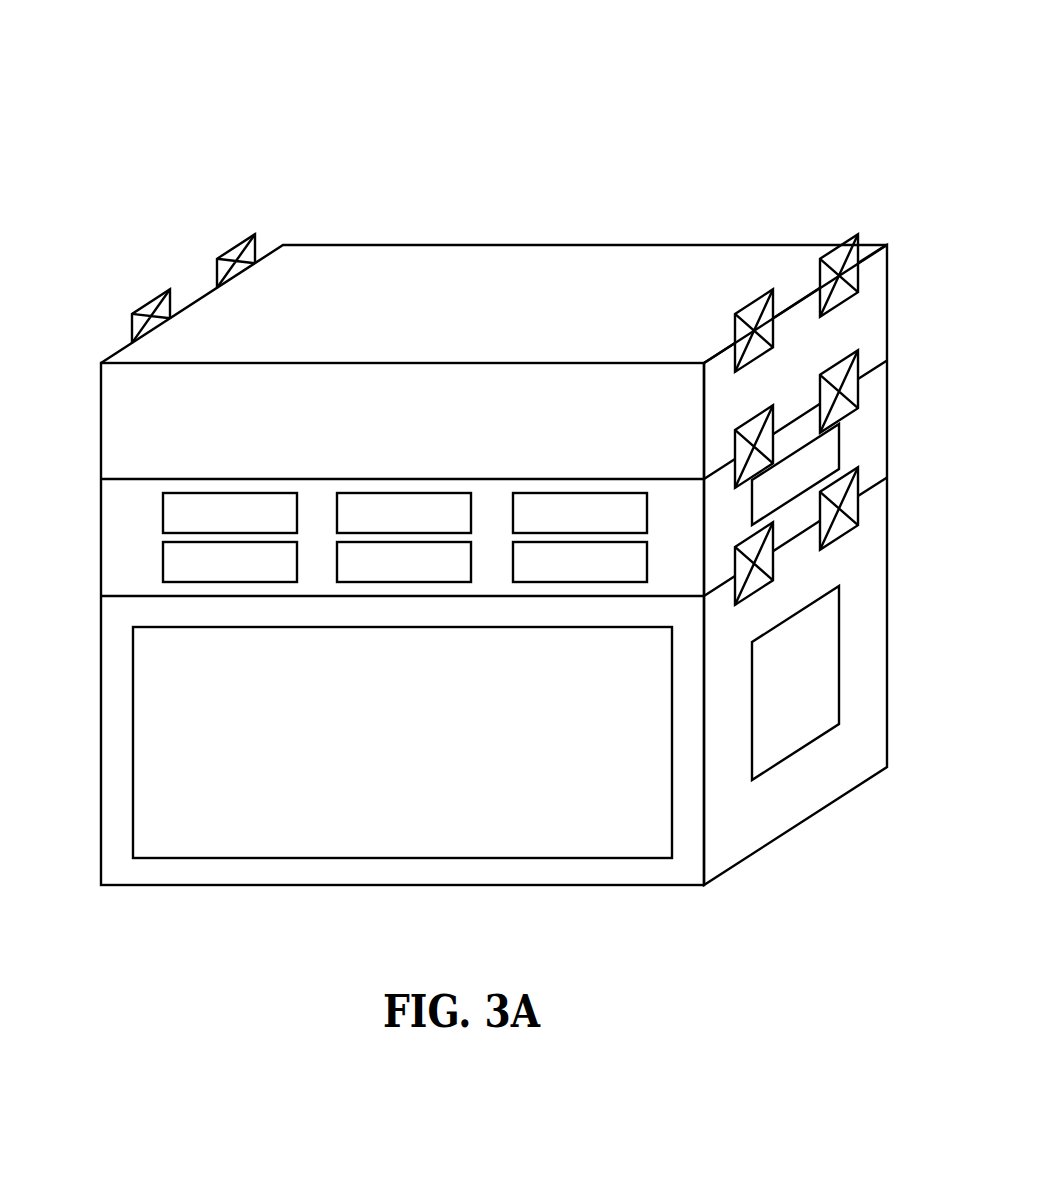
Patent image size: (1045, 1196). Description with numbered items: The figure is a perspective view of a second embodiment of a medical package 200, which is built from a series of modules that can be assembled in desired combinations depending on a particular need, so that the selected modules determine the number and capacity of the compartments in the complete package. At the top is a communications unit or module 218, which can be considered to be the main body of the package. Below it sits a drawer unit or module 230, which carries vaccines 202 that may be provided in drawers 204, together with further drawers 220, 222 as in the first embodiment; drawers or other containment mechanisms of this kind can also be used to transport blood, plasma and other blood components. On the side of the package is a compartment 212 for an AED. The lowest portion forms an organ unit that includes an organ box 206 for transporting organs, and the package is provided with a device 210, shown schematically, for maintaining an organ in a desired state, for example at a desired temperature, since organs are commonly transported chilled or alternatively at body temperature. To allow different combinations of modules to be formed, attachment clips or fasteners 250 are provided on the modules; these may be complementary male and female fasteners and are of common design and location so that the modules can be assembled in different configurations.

The medical package 200 is at (272, 89).
The vaccines 202 is at (602, 576).
The drawers 204 is at (425, 576).
The organ box 206 is at (424, 758).
The device 210 is at (817, 693).
The compartment 212 is at (830, 452).
The communications unit or module 218 is at (113, 424).
The drawer 220 is at (250, 526).
The drawer 222 is at (250, 576).
The drawer unit or module 230 is at (113, 536).
The attachment clips or fasteners 250 is at (235, 247).